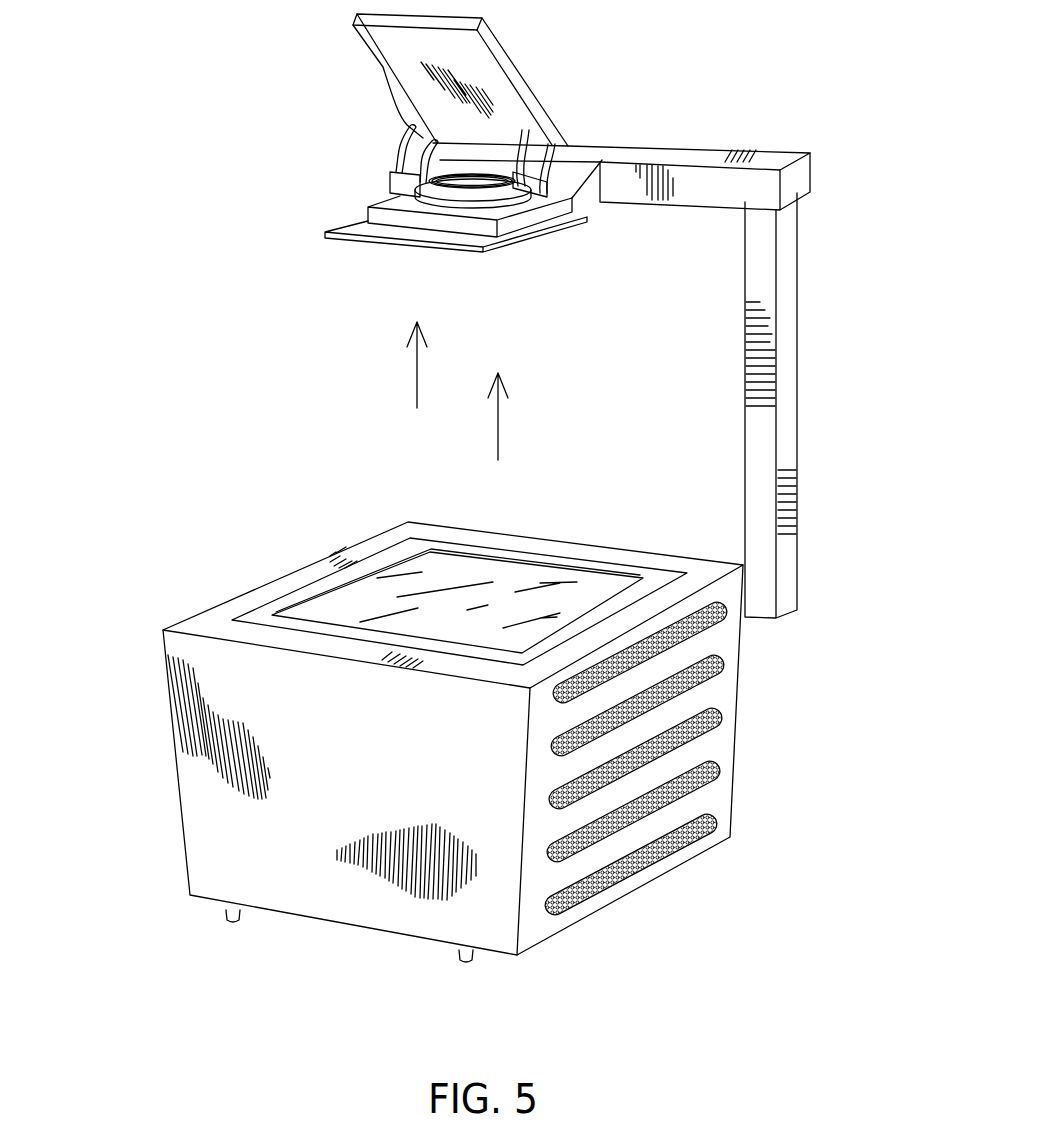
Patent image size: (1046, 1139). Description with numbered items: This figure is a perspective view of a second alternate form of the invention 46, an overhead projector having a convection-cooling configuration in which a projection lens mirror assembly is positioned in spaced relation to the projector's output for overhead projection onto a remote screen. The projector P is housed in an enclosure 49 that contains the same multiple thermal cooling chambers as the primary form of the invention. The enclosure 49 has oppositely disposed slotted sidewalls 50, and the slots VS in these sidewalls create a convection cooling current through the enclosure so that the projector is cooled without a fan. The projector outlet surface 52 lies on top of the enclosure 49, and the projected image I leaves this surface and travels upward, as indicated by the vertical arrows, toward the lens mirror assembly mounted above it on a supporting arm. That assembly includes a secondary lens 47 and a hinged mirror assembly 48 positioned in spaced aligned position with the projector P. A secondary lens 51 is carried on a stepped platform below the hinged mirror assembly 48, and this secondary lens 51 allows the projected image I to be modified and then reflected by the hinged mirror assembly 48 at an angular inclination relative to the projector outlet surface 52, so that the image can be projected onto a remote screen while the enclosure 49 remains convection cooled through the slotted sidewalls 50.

The second alternate form of the invention 46 is at (768, 755).
The secondary lens 47 is at (490, 182).
The hinged mirror assembly 48 is at (518, 66).
The enclosure 49 is at (738, 800).
The slotted sidewalls 50 is at (178, 801).
The secondary lens 51 is at (446, 195).
The projector outlet surface 52 is at (518, 582).
The projector P is at (218, 661).
The projected image I is at (499, 428).
The ventilation slots VS is at (717, 613).